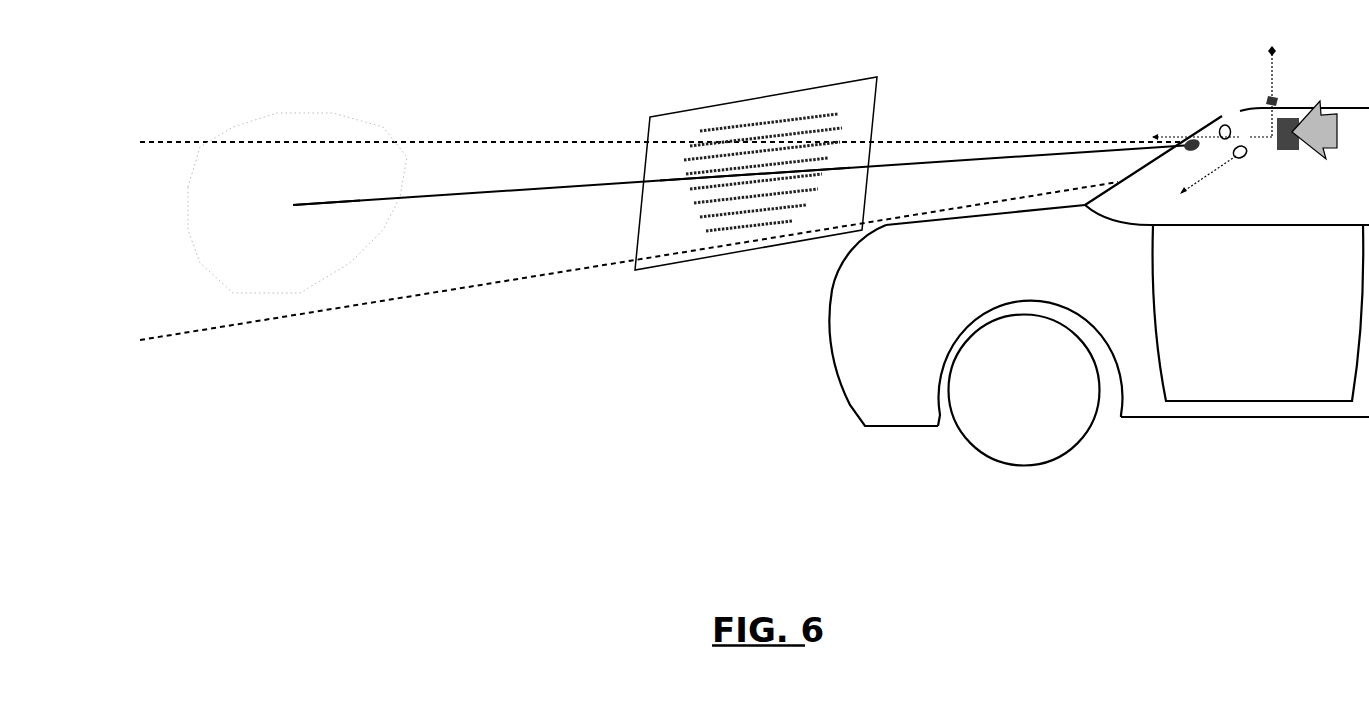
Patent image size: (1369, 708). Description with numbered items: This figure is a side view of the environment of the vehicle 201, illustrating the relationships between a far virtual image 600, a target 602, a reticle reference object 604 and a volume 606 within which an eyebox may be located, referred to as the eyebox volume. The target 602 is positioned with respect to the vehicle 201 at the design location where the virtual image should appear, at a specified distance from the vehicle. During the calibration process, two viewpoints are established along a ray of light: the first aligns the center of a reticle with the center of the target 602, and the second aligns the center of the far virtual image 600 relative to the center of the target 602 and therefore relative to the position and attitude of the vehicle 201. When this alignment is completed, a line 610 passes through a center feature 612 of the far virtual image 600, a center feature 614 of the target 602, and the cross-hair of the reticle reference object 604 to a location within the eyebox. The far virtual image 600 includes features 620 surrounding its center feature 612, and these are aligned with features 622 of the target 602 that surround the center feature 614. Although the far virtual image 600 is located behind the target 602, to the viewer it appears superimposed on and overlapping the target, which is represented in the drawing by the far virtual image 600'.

The far virtual image 600 is at (244, 203).
The far virtual image 600' is at (865, 91).
The target 602 is at (650, 117).
The reticle reference object 604 is at (1193, 136).
The volume 606 is at (1292, 128).
The line 610 is at (466, 194).
The center feature 612 is at (293, 204).
The center feature 614 is at (758, 172).
The features 620 is at (318, 126).
The features 622 is at (698, 114).
The vehicle 201 is at (1270, 418).